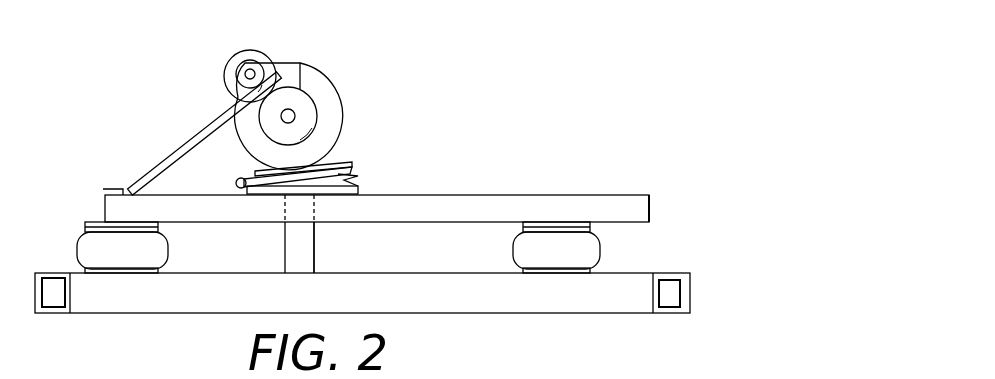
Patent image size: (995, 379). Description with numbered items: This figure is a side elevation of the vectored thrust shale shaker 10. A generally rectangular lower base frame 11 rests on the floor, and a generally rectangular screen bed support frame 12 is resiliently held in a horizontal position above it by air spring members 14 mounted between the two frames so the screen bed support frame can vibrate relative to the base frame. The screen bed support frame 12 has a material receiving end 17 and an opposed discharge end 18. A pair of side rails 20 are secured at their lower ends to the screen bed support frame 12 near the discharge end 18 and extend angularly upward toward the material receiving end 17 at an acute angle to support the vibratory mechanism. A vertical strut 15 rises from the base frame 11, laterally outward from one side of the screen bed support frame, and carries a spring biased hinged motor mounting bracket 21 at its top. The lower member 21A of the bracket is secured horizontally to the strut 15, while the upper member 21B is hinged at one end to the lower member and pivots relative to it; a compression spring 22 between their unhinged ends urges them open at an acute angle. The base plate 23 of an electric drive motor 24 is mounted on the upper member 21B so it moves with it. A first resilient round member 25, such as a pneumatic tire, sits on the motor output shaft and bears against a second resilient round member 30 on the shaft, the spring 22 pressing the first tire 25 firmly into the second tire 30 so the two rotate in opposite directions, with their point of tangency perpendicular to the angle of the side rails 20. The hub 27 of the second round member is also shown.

The vectored thrust shale shaker 10 is at (622, 160).
The lower base frame 11 is at (588, 304).
The screen bed support frame 12 is at (474, 201).
The air spring members 14 is at (82, 248).
The vertical strut 15 is at (308, 240).
The material receiving end 17 is at (627, 195).
The discharge end 18 is at (145, 192).
The side rails 20 is at (182, 147).
The spring biased hinged motor mounting bracket 21 is at (242, 208).
The lower member 21A is at (352, 195).
The upper member 21B is at (352, 164).
The compression spring 22 is at (347, 176).
The base plate 23 is at (348, 162).
The electric drive motor 24 is at (340, 88).
The first resilient round member 25 is at (312, 42).
The hub 27 is at (246, 62).
The second resilient round member 30 is at (235, 63).